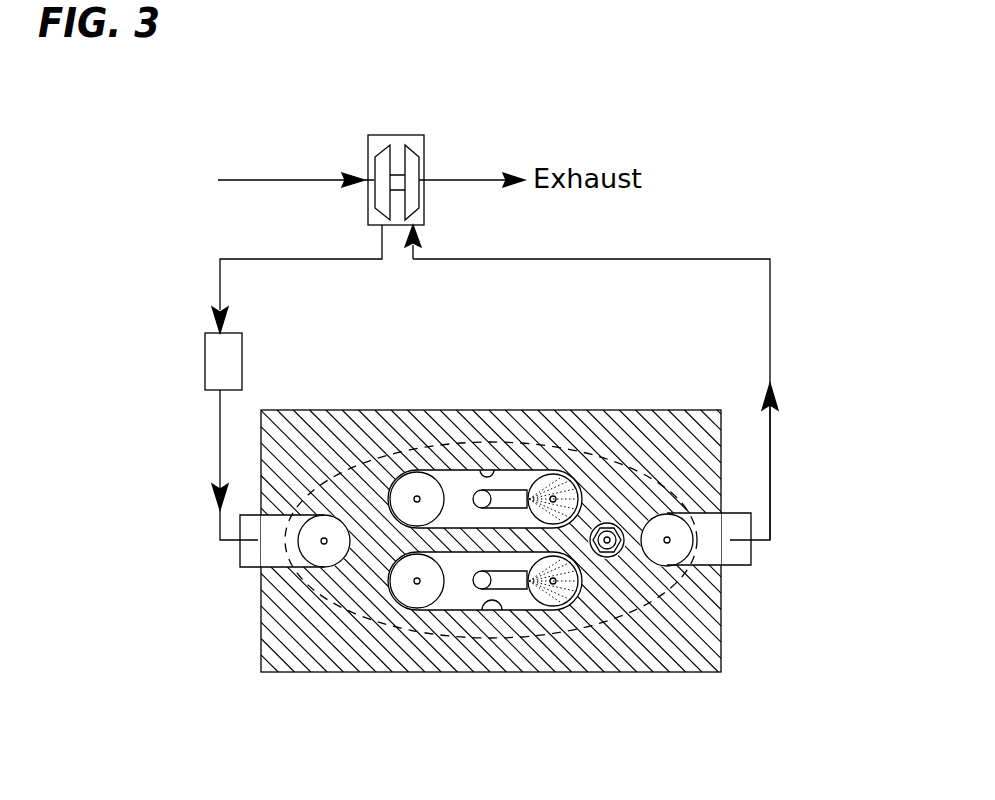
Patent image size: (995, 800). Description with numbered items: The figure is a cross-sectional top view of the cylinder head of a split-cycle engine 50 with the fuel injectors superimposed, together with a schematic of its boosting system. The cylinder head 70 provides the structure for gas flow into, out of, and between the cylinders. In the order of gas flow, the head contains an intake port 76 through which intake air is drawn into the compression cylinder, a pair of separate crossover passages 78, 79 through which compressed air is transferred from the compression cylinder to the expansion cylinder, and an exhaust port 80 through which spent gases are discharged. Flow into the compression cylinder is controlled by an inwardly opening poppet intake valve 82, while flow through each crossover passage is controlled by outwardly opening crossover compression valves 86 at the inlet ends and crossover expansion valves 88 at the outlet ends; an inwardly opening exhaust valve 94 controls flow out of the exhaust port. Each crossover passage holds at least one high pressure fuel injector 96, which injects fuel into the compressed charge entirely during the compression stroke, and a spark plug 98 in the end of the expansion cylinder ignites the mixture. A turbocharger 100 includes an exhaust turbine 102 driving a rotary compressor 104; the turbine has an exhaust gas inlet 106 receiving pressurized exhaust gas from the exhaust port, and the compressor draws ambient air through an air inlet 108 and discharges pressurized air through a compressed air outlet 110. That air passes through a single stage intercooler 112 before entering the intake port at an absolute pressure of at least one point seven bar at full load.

The split-cycle engine 50 is at (140, 476).
The cylinder head 70 is at (728, 643).
The intake port 76 is at (250, 554).
The crossover passage 78 is at (492, 477).
The crossover passage 79 is at (492, 606).
The exhaust port 80 is at (745, 553).
The intake valve 82 is at (320, 553).
The crossover compression valves 86 is at (408, 485).
The crossover expansion valves 88 is at (553, 478).
The exhaust valve 94 is at (665, 555).
The fuel injector 96 is at (507, 578).
The spark plug 98 is at (608, 524).
The turbocharger 100 is at (311, 156).
The exhaust turbine 102 is at (450, 179).
The rotary compressor 104 is at (383, 160).
The exhaust gas inlet 106 is at (417, 233).
The air inlet 108 is at (362, 183).
The compressed air outlet 110 is at (382, 228).
The intercooler 112 is at (205, 367).